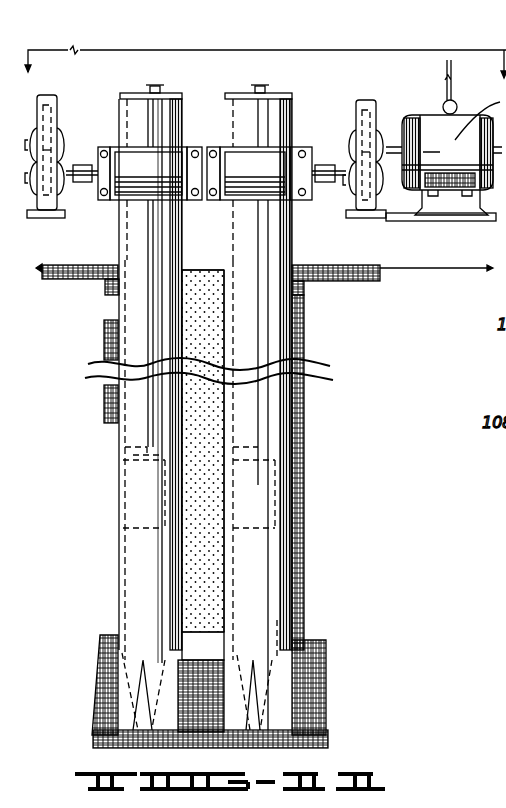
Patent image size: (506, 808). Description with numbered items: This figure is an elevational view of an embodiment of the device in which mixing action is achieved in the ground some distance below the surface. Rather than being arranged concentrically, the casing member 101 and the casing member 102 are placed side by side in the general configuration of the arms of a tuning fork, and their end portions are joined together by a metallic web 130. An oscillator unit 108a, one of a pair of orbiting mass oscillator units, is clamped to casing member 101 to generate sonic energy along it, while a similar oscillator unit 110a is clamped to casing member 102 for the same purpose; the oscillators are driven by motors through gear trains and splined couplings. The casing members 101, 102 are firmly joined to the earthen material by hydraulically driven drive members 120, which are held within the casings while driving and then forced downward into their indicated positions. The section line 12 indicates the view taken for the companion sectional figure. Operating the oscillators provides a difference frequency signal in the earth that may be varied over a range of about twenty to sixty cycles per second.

The section line 12- 12 is at (265, 48).
The orbiting mass oscillator unit 110a is at (150, 180).
The orbiting mass oscillator unit 108a is at (285, 198).
The outer tubular casing member 102 is at (140, 322).
The inner cylindrical casing member 101 is at (262, 332).
The pointed drive member 120 is at (135, 548).
The metallic web 130 is at (195, 644).